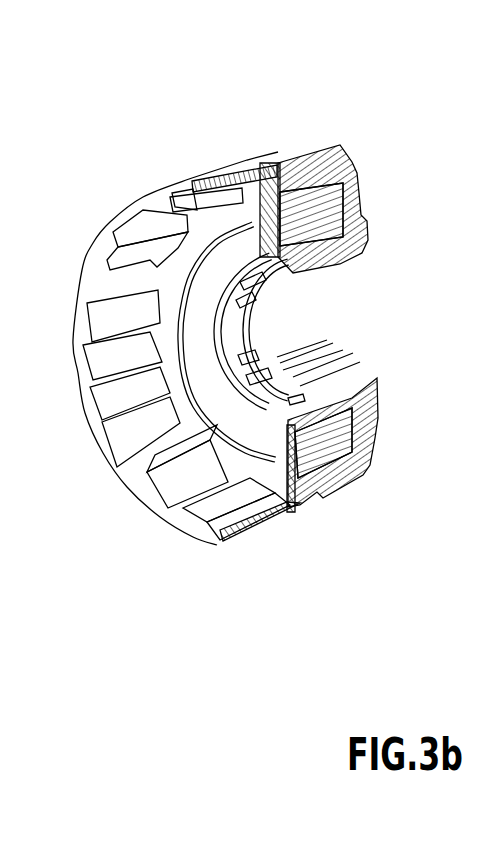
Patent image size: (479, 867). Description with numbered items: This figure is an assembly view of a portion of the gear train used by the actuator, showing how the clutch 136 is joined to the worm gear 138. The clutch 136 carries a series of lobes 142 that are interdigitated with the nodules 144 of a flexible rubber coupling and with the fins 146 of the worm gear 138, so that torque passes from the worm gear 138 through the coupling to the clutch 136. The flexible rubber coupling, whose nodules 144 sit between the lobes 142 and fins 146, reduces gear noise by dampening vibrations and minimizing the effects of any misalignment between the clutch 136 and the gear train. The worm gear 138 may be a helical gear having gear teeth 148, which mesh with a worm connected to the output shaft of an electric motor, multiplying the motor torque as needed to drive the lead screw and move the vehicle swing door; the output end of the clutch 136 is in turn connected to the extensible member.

The clutch 136 is at (228, 575).
The worm gear 138 is at (300, 118).
The lobes 142 is at (227, 337).
The nodules 144 is at (320, 208).
The fins 146 is at (255, 380).
The gear teeth 148 is at (252, 162).